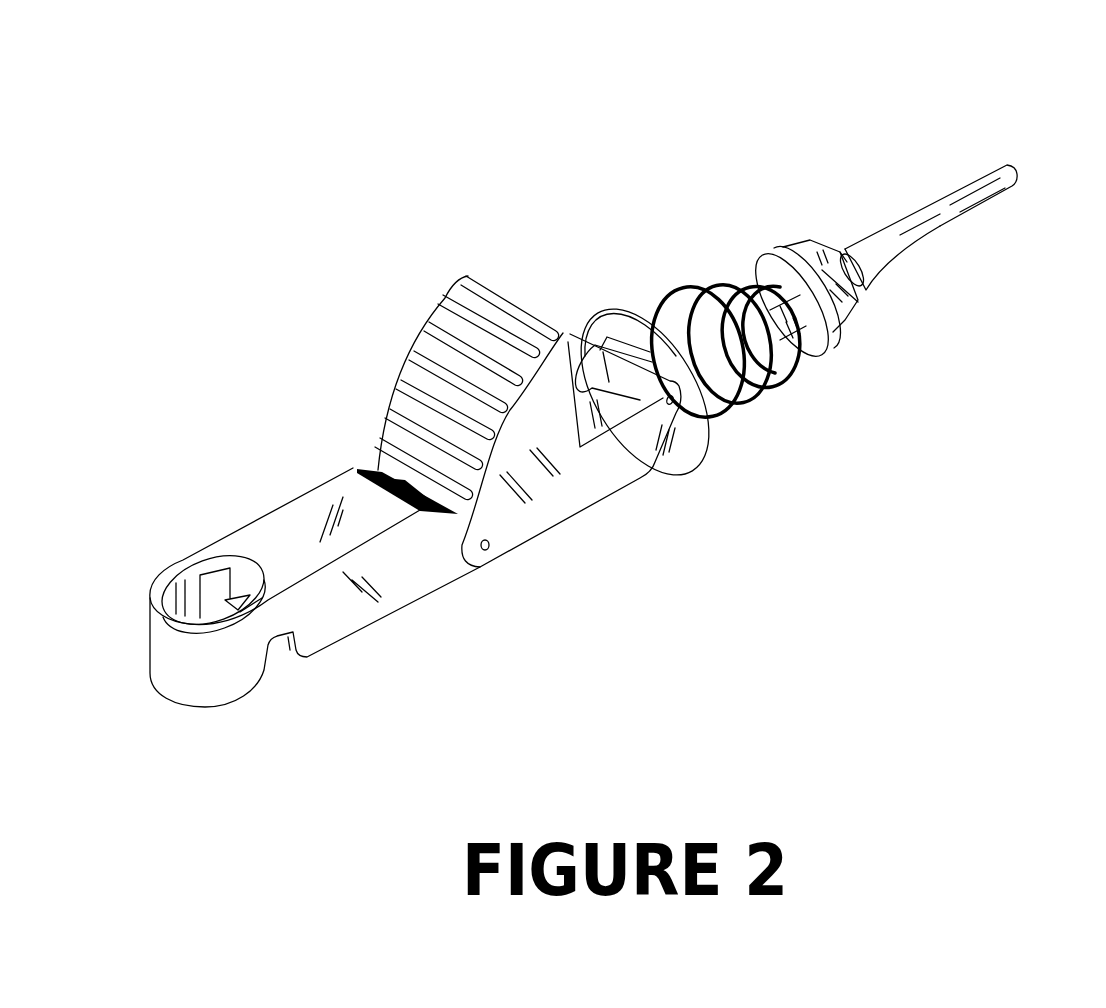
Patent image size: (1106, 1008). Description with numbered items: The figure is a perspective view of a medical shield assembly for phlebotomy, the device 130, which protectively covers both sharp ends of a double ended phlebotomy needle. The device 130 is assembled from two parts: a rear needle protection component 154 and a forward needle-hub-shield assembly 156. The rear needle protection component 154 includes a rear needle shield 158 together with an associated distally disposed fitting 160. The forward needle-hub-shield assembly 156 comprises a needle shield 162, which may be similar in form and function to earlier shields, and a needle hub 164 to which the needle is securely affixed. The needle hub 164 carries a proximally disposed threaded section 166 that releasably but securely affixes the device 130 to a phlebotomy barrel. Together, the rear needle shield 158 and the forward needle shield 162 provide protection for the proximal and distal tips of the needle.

The device 130 is at (660, 188).
The rear needle protection component 154 is at (892, 215).
The forward needle-hub-shield assembly 156 is at (388, 447).
The rear needle shield 158 is at (937, 240).
The fitting 160 is at (853, 320).
The needle shield 162 is at (507, 297).
The needle hub 164 is at (707, 453).
The threaded section 166 is at (707, 280).